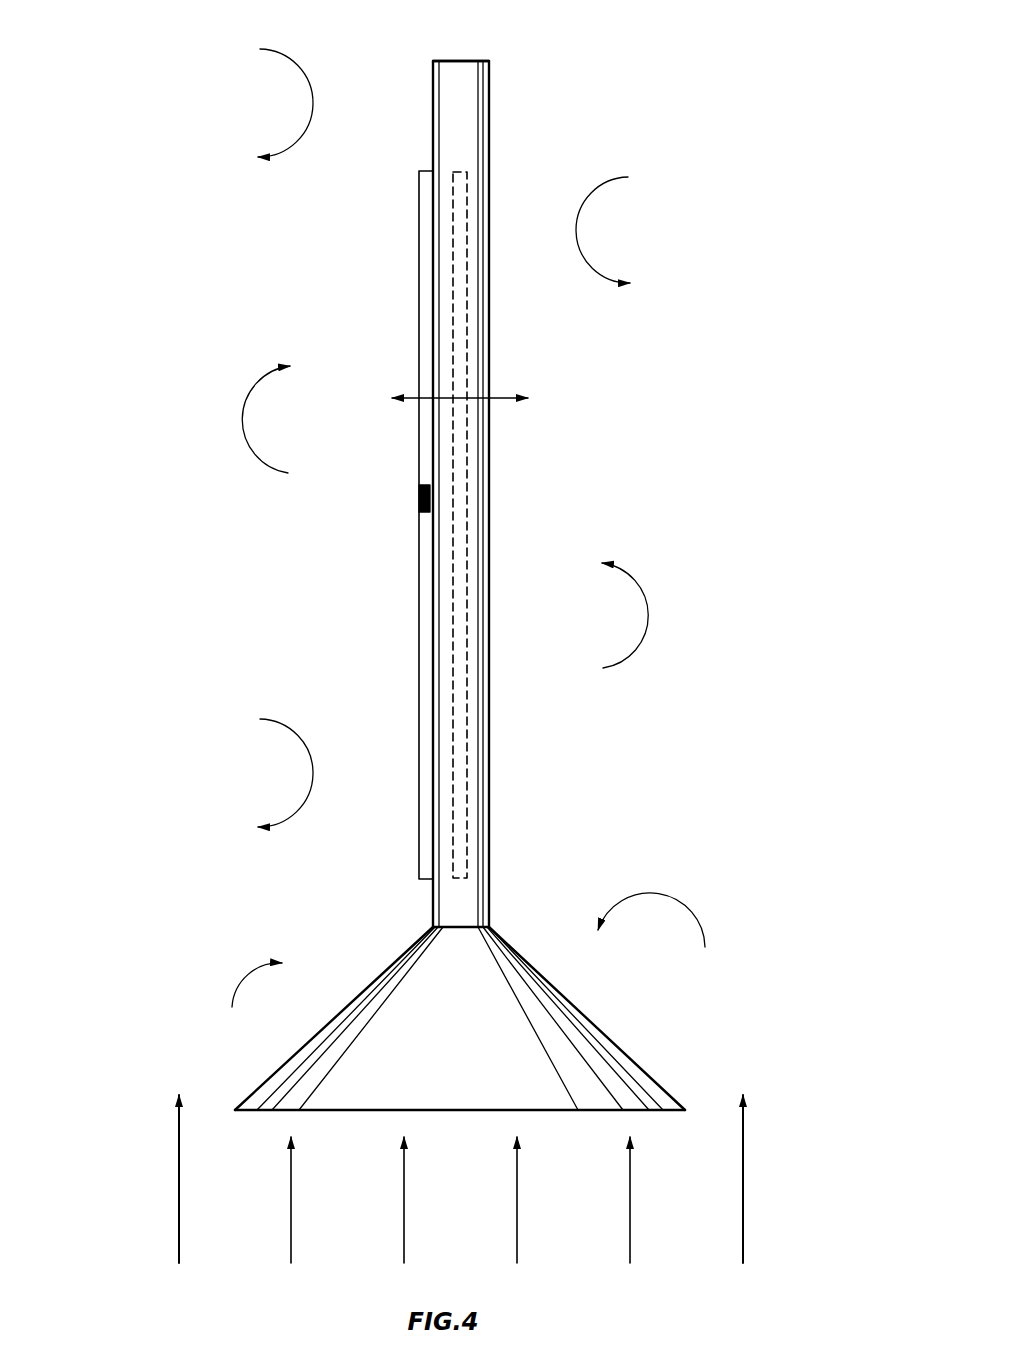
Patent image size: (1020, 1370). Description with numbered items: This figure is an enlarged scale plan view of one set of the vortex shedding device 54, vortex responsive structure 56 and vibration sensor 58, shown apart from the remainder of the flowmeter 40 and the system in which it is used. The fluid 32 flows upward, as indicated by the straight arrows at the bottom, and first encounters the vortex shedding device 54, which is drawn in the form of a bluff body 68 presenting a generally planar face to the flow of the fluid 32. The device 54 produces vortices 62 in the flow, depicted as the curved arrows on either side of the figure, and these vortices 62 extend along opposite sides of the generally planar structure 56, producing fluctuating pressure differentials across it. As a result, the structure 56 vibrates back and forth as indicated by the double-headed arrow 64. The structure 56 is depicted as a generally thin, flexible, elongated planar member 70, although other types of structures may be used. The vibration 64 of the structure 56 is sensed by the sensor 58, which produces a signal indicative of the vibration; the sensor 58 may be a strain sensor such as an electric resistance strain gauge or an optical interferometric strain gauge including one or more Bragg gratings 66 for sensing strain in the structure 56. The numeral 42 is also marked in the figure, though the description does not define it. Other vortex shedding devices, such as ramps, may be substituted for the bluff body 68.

The fluid 32 is at (178, 1178).
The flowmeter 40 is at (728, 88).
The fluid stream 42 is at (648, 432).
The vortex shedding device 54 is at (617, 1046).
The vortex responsive structure 56 is at (492, 515).
The vibration sensor 58 is at (418, 577).
The vortices 62 is at (300, 70).
The vibration 64 is at (496, 397).
The Bragg grating 66 is at (418, 504).
The bluff body 68 is at (437, 1110).
The planar member 70 is at (432, 137).